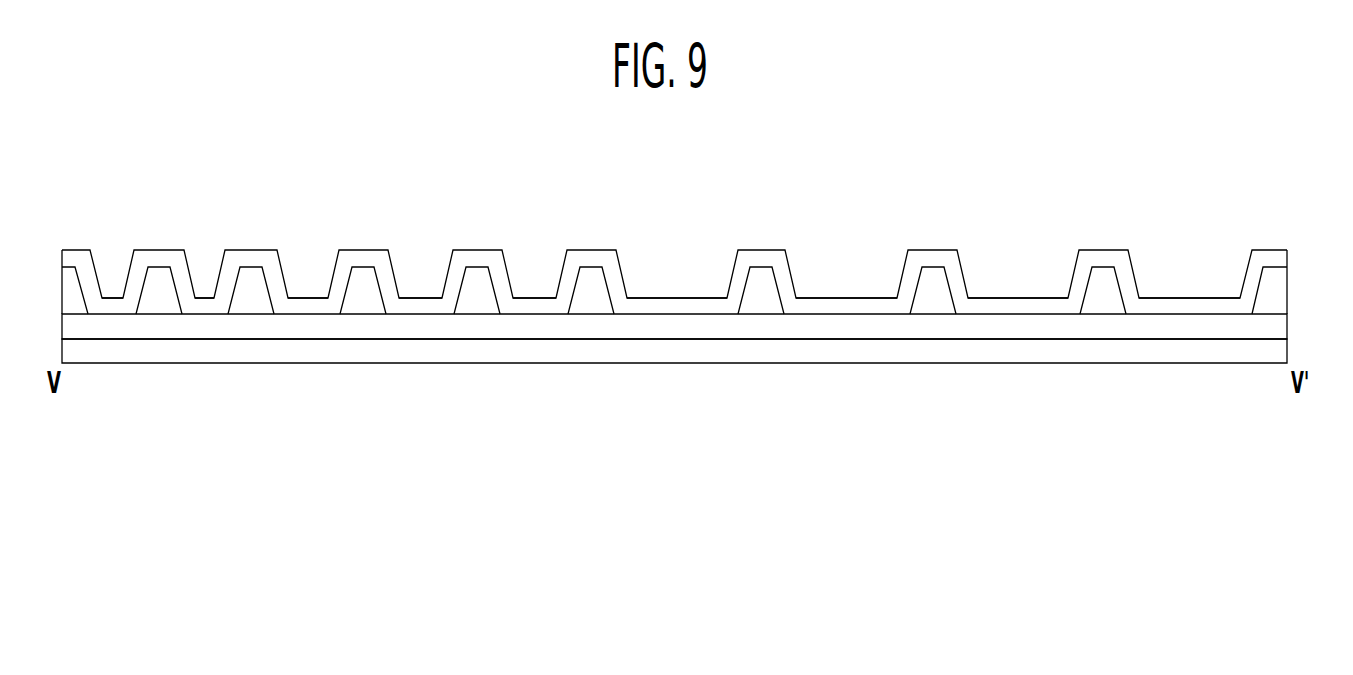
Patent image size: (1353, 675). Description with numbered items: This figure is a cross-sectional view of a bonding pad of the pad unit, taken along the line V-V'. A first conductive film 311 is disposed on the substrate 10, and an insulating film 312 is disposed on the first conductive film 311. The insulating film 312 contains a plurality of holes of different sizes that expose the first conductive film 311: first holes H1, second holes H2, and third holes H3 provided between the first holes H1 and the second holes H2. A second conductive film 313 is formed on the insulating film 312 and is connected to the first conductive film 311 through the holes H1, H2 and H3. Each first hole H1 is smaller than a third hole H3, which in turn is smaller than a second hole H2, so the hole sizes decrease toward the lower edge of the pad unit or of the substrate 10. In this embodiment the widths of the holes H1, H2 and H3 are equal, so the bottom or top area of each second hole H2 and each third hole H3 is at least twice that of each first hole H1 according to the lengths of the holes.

The substrate 10 is at (1278, 355).
The first conductive film 311 is at (1278, 327).
The insulating film 312 is at (1278, 290).
The second conductive film 313 is at (1278, 257).
The first holes H1 is at (113, 250).
The second holes H2 is at (675, 250).
The third holes H3 is at (307, 250).